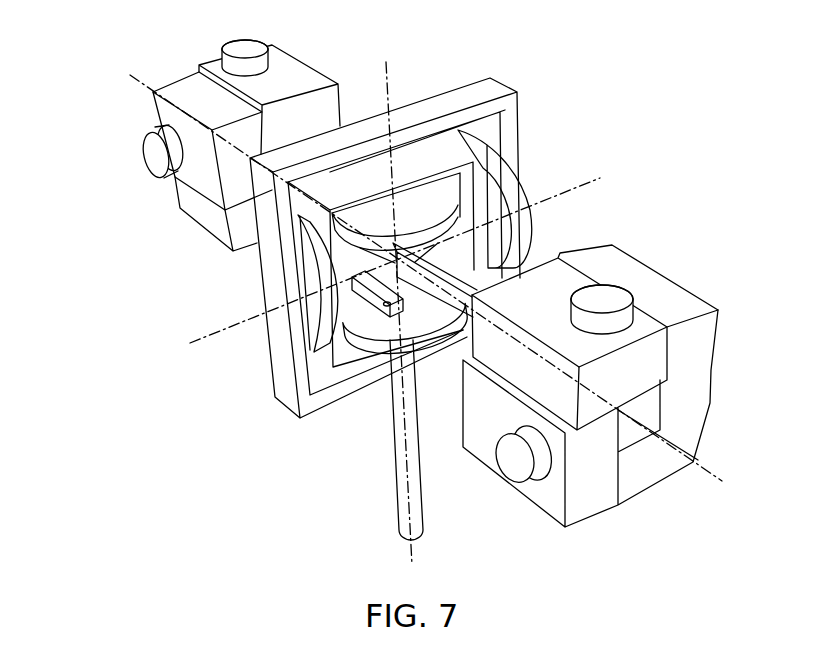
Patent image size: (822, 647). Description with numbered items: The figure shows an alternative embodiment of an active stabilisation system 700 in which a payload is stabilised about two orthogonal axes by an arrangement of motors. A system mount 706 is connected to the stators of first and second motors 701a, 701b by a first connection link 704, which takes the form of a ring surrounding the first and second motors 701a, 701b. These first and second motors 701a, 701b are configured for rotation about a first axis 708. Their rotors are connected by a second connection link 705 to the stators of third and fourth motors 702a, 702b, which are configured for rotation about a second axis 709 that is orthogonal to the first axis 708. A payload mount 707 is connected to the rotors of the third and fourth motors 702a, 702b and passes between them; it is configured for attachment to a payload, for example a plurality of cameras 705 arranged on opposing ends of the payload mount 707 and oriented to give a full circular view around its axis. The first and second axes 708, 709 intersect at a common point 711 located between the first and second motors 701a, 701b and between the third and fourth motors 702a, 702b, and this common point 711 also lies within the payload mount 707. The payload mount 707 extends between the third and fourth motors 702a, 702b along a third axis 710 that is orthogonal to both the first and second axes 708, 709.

The active stabilisation system 700 is at (103, 46).
The first motor 701a is at (313, 323).
The second motor 701b is at (516, 190).
The third motor 702a is at (413, 200).
The fourth motor 702b is at (390, 337).
The first connection link 704 is at (277, 292).
The second connection link / cameras 705 is at (162, 118).
The system mount 706 is at (397, 462).
The payload mount 707 is at (477, 260).
The first axis 708 is at (190, 343).
The second axis 709 is at (388, 85).
The third axis 710 is at (705, 468).
The common point 711 is at (350, 280).